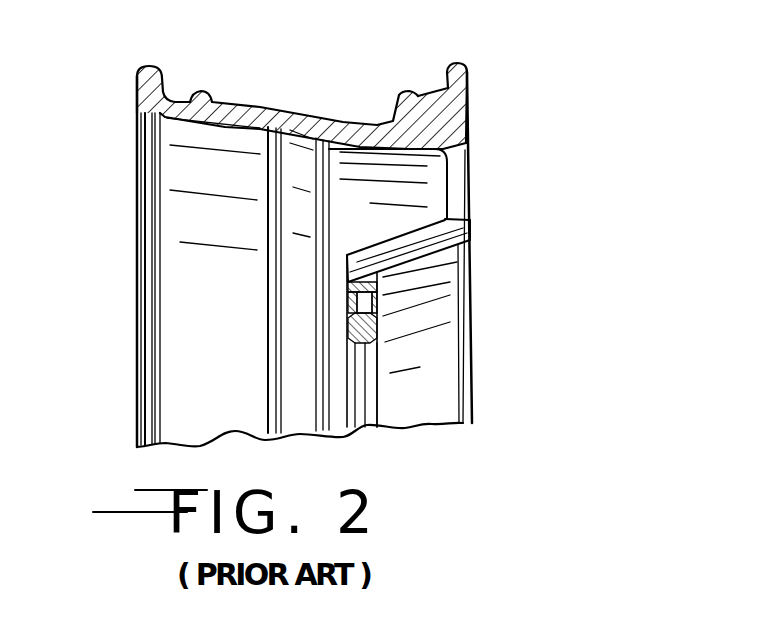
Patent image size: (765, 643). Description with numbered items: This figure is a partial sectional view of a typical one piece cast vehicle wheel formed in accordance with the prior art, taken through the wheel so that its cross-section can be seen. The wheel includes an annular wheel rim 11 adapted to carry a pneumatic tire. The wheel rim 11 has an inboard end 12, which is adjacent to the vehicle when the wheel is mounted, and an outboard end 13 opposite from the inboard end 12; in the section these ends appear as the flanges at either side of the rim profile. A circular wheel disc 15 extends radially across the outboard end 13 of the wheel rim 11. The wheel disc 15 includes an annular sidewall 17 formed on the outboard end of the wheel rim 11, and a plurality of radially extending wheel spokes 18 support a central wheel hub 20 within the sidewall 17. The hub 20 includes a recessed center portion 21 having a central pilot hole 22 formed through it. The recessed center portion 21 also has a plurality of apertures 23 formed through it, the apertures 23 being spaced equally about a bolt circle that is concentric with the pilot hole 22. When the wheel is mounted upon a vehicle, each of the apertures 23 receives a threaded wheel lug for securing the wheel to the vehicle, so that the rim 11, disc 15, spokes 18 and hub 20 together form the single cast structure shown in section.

The wheel rim 11 is at (255, 105).
The inboard end 12 is at (155, 67).
The outboard end 13 is at (451, 63).
The wheel disc 15 is at (364, 234).
The annular sidewall 17 is at (470, 113).
The wheel spokes 18 is at (460, 168).
The wheel hub 20 is at (468, 228).
The recessed center portion 21 is at (347, 258).
The central pilot hole 22 is at (360, 393).
The apertures 23 is at (348, 305).